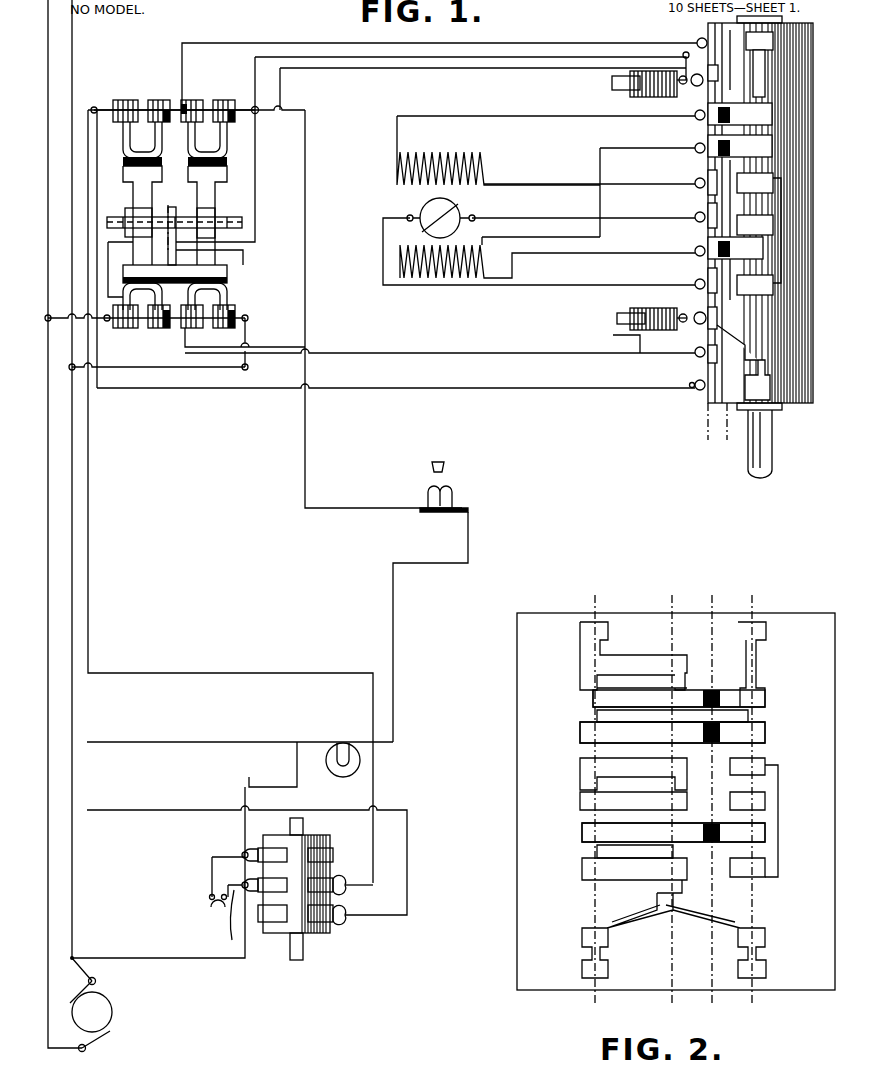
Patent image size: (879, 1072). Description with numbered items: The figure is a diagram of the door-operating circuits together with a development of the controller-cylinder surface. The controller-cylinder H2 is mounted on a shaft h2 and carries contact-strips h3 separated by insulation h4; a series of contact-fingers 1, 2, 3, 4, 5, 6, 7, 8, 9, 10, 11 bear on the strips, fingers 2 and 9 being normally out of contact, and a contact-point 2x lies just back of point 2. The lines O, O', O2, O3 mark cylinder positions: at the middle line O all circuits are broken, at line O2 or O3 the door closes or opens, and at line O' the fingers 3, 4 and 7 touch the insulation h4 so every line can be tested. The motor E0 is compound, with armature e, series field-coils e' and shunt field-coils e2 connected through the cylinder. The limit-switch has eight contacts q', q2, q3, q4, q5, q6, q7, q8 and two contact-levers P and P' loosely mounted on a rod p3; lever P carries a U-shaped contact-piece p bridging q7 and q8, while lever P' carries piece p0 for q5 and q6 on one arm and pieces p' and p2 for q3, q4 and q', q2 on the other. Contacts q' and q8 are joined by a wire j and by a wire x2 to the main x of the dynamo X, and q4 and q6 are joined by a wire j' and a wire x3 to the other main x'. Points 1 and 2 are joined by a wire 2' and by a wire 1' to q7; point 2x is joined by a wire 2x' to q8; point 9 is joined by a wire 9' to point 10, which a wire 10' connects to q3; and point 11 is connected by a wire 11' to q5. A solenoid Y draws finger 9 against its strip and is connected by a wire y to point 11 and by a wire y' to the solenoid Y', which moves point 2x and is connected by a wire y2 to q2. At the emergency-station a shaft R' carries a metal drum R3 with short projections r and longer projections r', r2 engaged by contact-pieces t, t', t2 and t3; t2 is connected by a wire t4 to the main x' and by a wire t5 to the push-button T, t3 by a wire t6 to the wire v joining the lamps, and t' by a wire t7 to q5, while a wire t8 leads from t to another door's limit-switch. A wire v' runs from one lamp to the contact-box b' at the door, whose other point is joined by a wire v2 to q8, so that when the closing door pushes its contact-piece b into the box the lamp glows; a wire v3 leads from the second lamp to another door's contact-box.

In FIG. 1, the contact-finger 1 is at (689, 28).
In FIG. 1, the wire 1' is at (439, 60).
In FIG. 1, the contact-finger 2 is at (647, 94).
In FIG. 1, the wire 2' is at (665, 29).
In FIG. 1, the contact-point 2x is at (642, 42).
In FIG. 1, the wire 2x' is at (472, 73).
In FIG. 1, the contact-finger 3 is at (692, 118).
In FIG. 1, the contact-finger 4 is at (692, 150).
In FIG. 1, the contact-finger 5 is at (692, 185).
In FIG. 1, the contact-finger 6 is at (692, 220).
In FIG. 1, the contact-finger 7 is at (692, 253).
In FIG. 1, the contact-finger 8 is at (692, 286).
In FIG. 1, the contact-finger 9 is at (675, 331).
In FIG. 1, the wire 9' is at (651, 372).
In FIG. 1, the contact-finger 10 is at (675, 383).
In FIG. 1, the wire 10' is at (440, 337).
In FIG. 1, the contact-finger 11 is at (688, 408).
In FIG. 1, the wire 11' is at (396, 372).
In FIG. 1, the contact-piece b is at (454, 459).
In FIG. 1, the contact-box b' is at (459, 494).
In FIG. 1, the armature e is at (539, 241).
In FIG. 1, the series field-coils e' is at (498, 150).
In FIG. 1, the shunt field-coils e2 is at (462, 262).
In FIG. 1, the motor E0 is at (357, 190).
In FIG. 1, the shaft h2 is at (772, 448).
In FIG. 1, the contact-strips h3 is at (767, 113).
In FIG. 2, the contact-strips h3 is at (745, 693).
In FIG. 1, the insulation h4 is at (742, 249).
In FIG. 2, the insulation h4 is at (700, 858).
In FIG. 1, the controller-cylinder H2 is at (813, 275).
In FIG. 2, the controller-cylinder H2 is at (653, 800).
In FIG. 1, the wire j is at (188, 177).
In FIG. 1, the wire j' is at (213, 226).
In FIG. 1, the middle-position line O is at (708, 433).
In FIG. 2, the middle-position line O is at (672, 799).
In FIG. 1, the test-position line O' is at (730, 430).
In FIG. 2, the test-position line O' is at (712, 799).
In FIG. 2, the closing-position line O2 is at (756, 798).
In FIG. 2, the opening-position line O3 is at (599, 798).
In FIG. 1, the U-shaped contact-piece p is at (219, 144).
In FIG. 1, the contact-piece p' is at (196, 287).
In FIG. 1, the U-shaped contact-piece p0 is at (123, 140).
In FIG. 1, the contact-piece p2 is at (150, 300).
In FIG. 1, the rod p3 is at (242, 222).
In FIG. 1, the single contact-lever P is at (216, 215).
In FIG. 1, the double contact-lever P' is at (131, 215).
In FIG. 1, the contact q' is at (124, 365).
In FIG. 1, the contact q2 is at (160, 328).
In FIG. 1, the contact q3 is at (192, 328).
In FIG. 1, the contact q4 is at (220, 328).
In FIG. 1, the contact q5 is at (120, 100).
In FIG. 1, the contact q6 is at (158, 100).
In FIG. 1, the contact q7 is at (193, 100).
In FIG. 1, the contact q8 is at (230, 92).
In FIG. 1, the short projections r is at (299, 941).
In FIG. 1, the longer projections r' is at (300, 869).
In FIG. 1, the longer projections r2 is at (275, 855).
In FIG. 1, the shaft R' is at (296, 912).
In FIG. 1, the metal drum R3 is at (290, 935).
In FIG. 1, the contact-piece t is at (348, 925).
In FIG. 1, the contact-piece t' is at (355, 894).
In FIG. 1, the contact-finger t2 is at (231, 874).
In FIG. 1, the contact-finger t3 is at (243, 852).
In FIG. 1, the wire t4 is at (160, 958).
In FIG. 1, the wire t5 is at (232, 915).
In FIG. 1, the wire t6 is at (305, 768).
In FIG. 1, the wire t7 is at (373, 772).
In FIG. 1, the wire t8 is at (148, 810).
In FIG. 1, the push-button T is at (211, 915).
In FIG. 1, the wire v is at (321, 758).
In FIG. 1, the wire v' is at (333, 652).
In FIG. 1, the wire v2 is at (305, 310).
In FIG. 1, the wire v3 is at (172, 752).
In FIG. 1, the main x is at (67, 526).
In FIG. 1, the main x' is at (230, 496).
In FIG. 1, the wire x2 is at (60, 318).
In FIG. 1, the wire x3 is at (262, 367).
In FIG. 1, the dynamo X is at (91, 1015).
In FIG. 1, the wire y is at (615, 337).
In FIG. 1, the wire y' is at (636, 233).
In FIG. 1, the wire y2 is at (447, 68).
In FIG. 1, the solenoid Y is at (636, 308).
In FIG. 1, the solenoid Y' is at (626, 83).